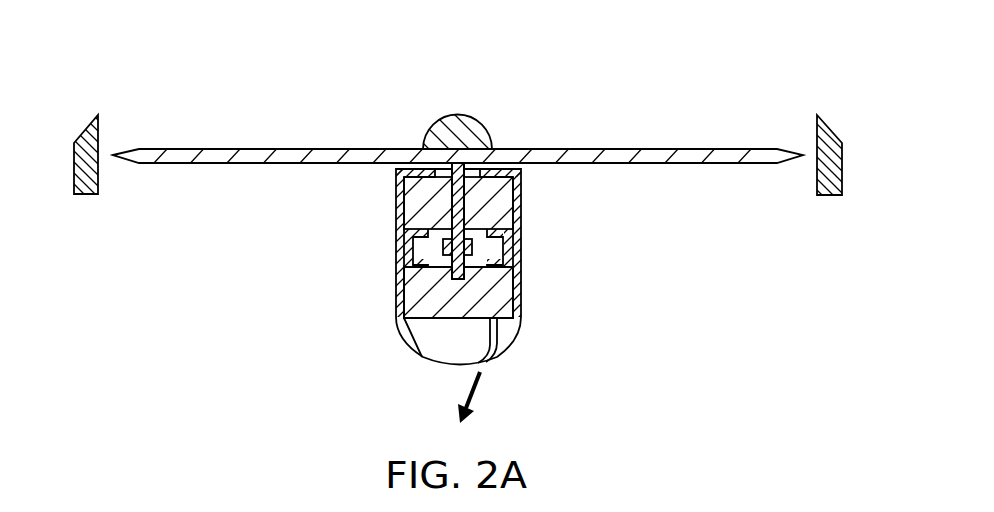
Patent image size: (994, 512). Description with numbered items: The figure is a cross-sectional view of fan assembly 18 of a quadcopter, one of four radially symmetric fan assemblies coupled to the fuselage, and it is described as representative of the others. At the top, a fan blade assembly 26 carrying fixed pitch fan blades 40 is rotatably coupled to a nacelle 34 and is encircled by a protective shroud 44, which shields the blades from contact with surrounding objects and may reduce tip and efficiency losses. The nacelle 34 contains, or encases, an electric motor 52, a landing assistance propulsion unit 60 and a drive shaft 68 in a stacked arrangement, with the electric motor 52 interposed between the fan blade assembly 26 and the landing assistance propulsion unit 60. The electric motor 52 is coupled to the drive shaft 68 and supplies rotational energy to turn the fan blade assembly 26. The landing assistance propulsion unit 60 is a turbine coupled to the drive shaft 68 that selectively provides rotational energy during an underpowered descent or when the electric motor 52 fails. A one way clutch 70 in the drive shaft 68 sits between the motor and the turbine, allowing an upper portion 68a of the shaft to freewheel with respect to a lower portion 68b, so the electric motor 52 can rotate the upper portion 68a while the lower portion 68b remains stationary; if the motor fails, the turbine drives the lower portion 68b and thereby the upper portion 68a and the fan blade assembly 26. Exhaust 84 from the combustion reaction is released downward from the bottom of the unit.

The fan assembly 18 is at (190, 72).
The fan blade assembly 26 is at (464, 117).
The fan blades 40 is at (610, 149).
The protective shroud 44 is at (830, 135).
The nacelle 34 is at (397, 213).
The electric motor 52 is at (505, 182).
The landing assistance propulsion unit 60 is at (410, 283).
The drive shaft 68 is at (462, 198).
The upper portion of driveshaft 68a is at (458, 221).
The lower portion of driveshaft 68b is at (460, 274).
The one way clutch 70 is at (443, 247).
The exhaust 84 is at (478, 393).